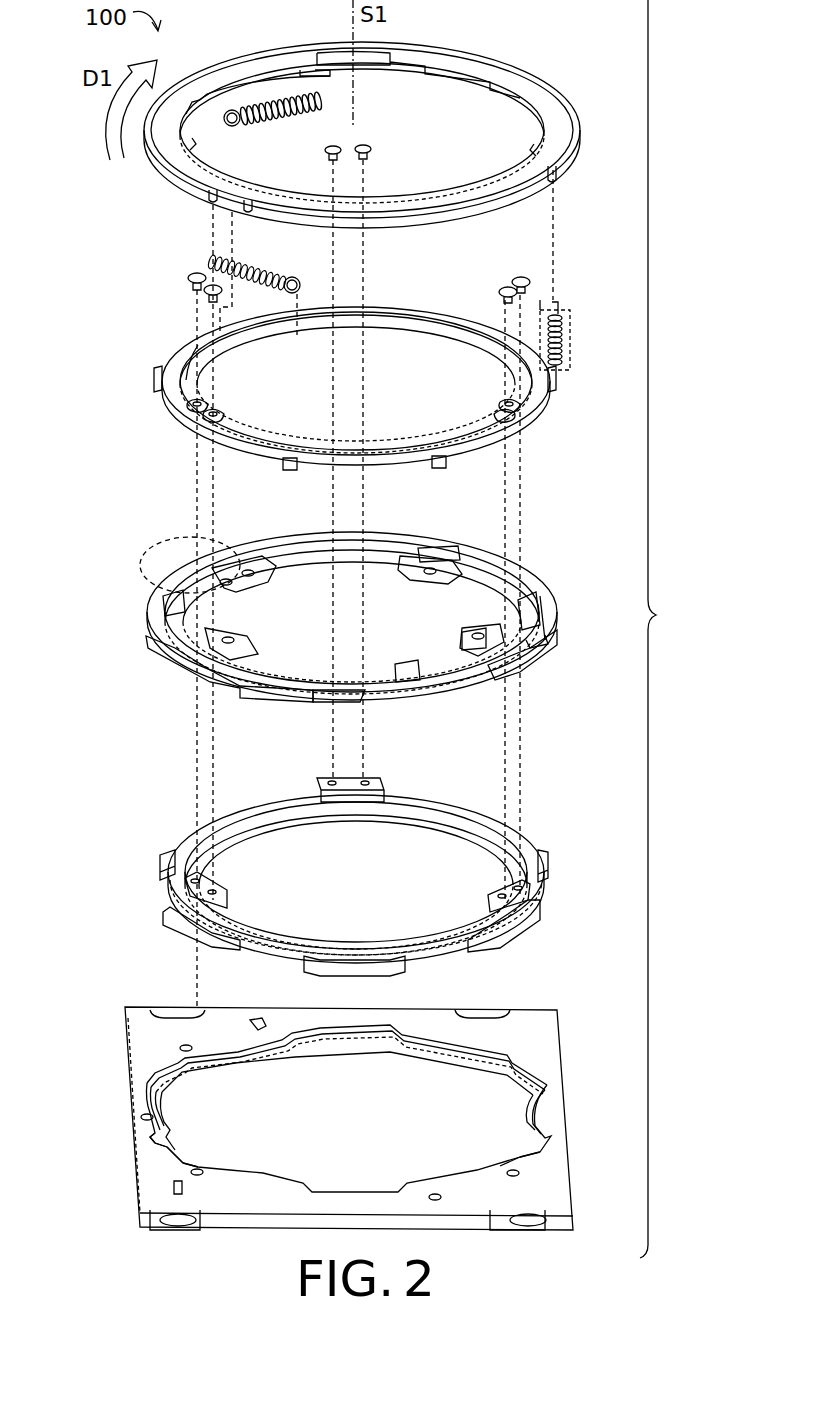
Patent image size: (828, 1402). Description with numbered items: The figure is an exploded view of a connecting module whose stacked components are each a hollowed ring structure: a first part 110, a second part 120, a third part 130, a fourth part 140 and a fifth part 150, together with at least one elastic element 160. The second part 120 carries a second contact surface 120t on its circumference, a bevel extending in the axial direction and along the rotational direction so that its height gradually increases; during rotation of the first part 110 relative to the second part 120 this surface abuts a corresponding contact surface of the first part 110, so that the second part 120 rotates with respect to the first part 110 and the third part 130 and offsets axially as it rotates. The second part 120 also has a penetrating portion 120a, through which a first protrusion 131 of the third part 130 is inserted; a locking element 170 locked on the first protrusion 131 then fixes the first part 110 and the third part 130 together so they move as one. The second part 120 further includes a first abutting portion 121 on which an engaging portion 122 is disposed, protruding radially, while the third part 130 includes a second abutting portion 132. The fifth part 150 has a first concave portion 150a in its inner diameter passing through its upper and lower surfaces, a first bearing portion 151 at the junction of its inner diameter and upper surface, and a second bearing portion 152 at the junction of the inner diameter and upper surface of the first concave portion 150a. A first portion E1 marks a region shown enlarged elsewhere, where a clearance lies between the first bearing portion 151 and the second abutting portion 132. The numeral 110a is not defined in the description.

The first part 110 is at (555, 400).
The inner surface of bayonet ring 110a is at (190, 350).
The second part 120 is at (545, 556).
The penetrating portion 120a is at (190, 598).
The second contact surface 120t is at (545, 598).
The first abutting portion 121 is at (556, 625).
The engaging portion 122 is at (160, 652).
The third part 130 is at (545, 895).
The first protrusion 131 is at (392, 796).
The second abutting portion 132 is at (178, 932).
The fourth part 140 is at (578, 150).
The fifth part 150 is at (565, 1110).
The first concave portion 150a is at (182, 1157).
The first bearing portion 151 is at (160, 1095).
The second bearing portion 152 is at (170, 1140).
The elastic element 160 is at (274, 120).
The locking element 170 is at (185, 284).
The first portion E1 is at (178, 545).